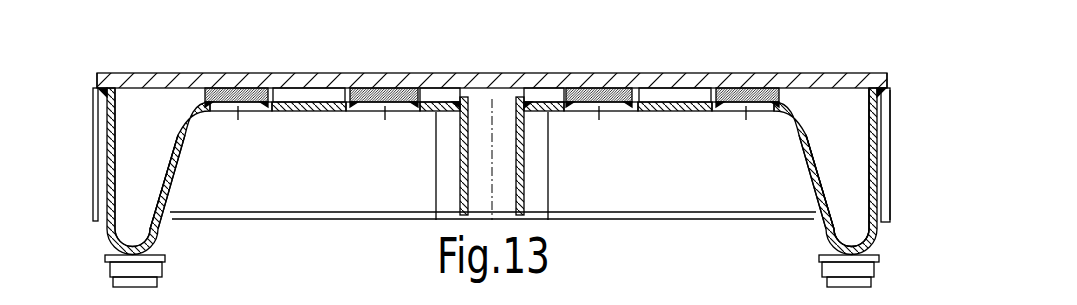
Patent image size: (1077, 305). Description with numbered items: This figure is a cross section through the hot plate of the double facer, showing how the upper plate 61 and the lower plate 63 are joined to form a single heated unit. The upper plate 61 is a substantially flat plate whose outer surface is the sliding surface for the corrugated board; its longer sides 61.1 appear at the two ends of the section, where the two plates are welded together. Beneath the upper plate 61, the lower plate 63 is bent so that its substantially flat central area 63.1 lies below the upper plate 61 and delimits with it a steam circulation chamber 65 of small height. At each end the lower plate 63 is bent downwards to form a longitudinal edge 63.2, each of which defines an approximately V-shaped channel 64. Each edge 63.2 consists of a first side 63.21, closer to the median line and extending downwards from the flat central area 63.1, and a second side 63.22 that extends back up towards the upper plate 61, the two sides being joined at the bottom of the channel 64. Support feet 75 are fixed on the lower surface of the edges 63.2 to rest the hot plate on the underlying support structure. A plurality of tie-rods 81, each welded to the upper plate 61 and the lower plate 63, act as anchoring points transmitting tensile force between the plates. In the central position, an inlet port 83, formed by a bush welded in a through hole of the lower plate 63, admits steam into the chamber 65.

The upper plate 61 is at (813, 73).
The longer sides of the upper plate 61.1 is at (97, 74).
The lower plate 63 is at (895, 129).
The flat central area of the lower plate 63.1 is at (645, 106).
The longitudinal edges of the lower plate 63.2 is at (105, 235).
The first side of the downwardly bent edge 63.21 is at (177, 183).
The second side of the downwardly bent edge 63.22 is at (113, 152).
The channel 64 is at (154, 175).
The steam circulation chamber 65 is at (680, 97).
The support foot 75 is at (164, 268).
The tie-rod 81 is at (247, 89).
The inlet port 83 is at (478, 104).